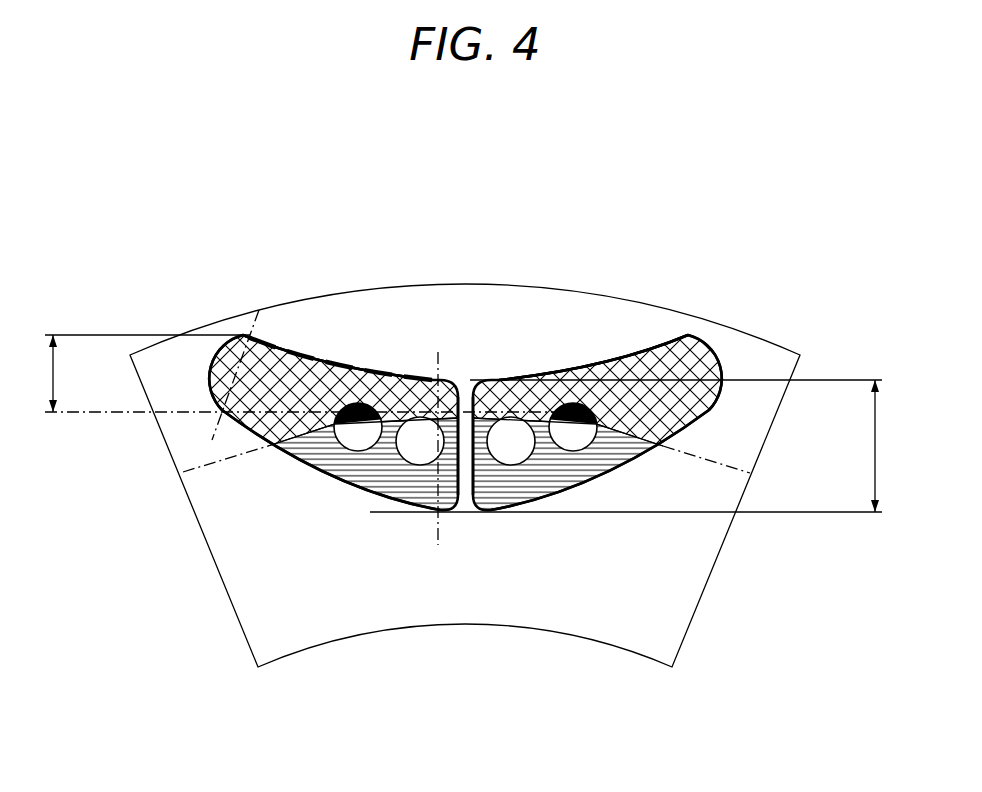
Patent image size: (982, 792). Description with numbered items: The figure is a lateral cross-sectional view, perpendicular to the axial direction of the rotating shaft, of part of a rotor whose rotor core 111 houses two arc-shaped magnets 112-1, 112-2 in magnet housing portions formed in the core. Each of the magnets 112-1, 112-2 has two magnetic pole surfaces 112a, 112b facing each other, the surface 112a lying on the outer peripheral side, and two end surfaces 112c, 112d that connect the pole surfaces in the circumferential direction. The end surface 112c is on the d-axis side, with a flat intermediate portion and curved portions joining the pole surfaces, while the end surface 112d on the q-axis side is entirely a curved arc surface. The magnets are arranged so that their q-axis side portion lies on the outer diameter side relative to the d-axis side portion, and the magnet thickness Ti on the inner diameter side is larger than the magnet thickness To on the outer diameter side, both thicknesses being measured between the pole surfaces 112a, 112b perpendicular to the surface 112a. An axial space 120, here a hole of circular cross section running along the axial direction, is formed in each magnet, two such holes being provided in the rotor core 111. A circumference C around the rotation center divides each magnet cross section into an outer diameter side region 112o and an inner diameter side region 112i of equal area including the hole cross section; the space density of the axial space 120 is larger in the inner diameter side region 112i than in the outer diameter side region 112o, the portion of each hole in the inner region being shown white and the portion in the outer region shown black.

The rotor core 111 is at (790, 355).
The magnet 112-1 is at (378, 392).
The magnet 112-2 is at (547, 397).
The axial space 120 is at (358, 404).
The outer diameter side region 112o is at (250, 342).
The magnetic pole surface 112a is at (297, 360).
The end surface 112d is at (192, 350).
The magnetic pole surface 112b is at (312, 470).
The inner diameter side region 112i is at (357, 472).
The end surface 112c is at (461, 430).
The circumference C is at (175, 492).
The magnet thickness on the outer diameter side To is at (135, 373).
The magnet thickness on the inner diameter side Ti is at (636, 446).